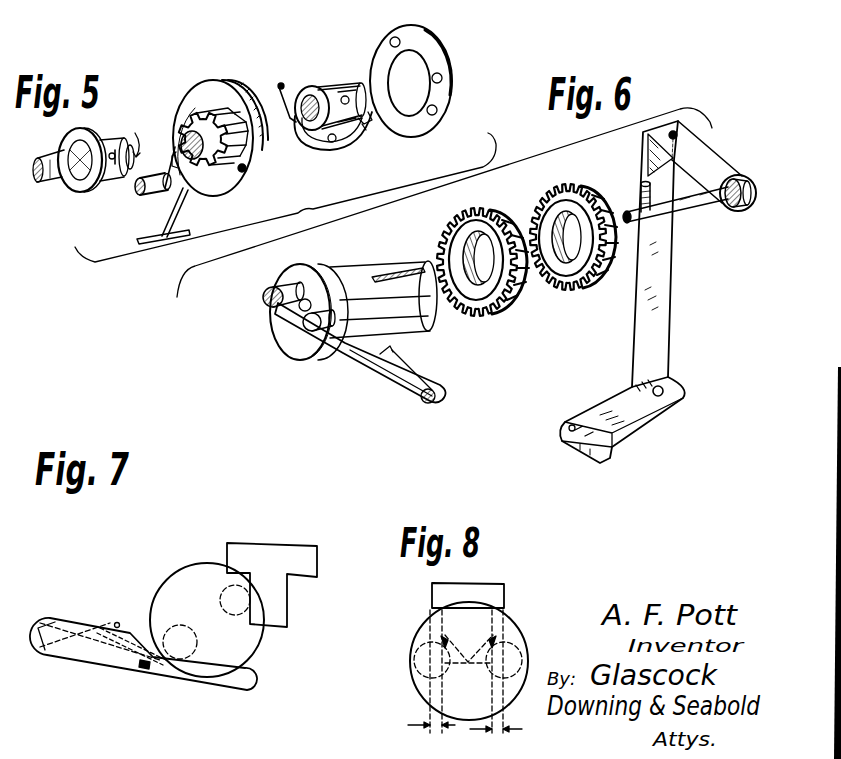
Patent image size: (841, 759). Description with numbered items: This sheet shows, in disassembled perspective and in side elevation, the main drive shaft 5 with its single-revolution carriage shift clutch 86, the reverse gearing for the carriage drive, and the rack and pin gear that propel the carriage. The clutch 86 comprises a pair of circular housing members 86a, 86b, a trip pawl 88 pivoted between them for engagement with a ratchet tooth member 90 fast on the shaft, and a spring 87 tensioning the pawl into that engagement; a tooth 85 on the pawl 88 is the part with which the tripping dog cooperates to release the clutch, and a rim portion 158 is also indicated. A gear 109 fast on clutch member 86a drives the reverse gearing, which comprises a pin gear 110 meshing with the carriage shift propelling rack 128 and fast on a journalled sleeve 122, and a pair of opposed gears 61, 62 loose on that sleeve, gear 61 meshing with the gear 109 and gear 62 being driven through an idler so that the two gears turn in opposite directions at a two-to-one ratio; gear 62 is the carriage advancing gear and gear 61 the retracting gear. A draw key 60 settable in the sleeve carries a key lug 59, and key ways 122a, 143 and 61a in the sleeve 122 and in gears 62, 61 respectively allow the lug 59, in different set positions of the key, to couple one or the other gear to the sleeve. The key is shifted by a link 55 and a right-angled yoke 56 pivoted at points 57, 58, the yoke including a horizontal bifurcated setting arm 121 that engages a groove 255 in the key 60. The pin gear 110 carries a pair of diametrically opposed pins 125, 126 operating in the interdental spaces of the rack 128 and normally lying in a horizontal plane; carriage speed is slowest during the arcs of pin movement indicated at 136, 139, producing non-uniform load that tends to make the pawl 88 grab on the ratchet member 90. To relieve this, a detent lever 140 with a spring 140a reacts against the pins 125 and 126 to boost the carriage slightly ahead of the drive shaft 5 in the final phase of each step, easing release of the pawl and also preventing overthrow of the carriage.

In FIG. 5, the drive shaft 5 is at (50, 183).
In FIG. 5, the disc rim 158 is at (222, 82).
In FIG. 5, the carriage shift clutch 86 is at (245, 187).
In FIG. 5, the circular housing member 86a is at (237, 182).
In FIG. 5, the circular housing member 86b is at (413, 127).
In FIG. 5, the gear 109 is at (215, 167).
In FIG. 5, the spring 87 is at (291, 92).
In FIG. 5, the ratchet tooth member 90 is at (339, 84).
In FIG. 5, the trip pawl 88 is at (320, 150).
In FIG. 5, the tooth 85 is at (363, 128).
In FIG. 6, the pin gear 110 is at (297, 352).
In FIG. 7, the pin gear 110 is at (247, 650).
In FIG. 8, the pin gear 110 is at (410, 675).
In FIG. 6, the sleeve 122 is at (393, 307).
In FIG. 6, the key way 122a is at (370, 274).
In FIG. 6, the pin 125 is at (262, 296).
In FIG. 7, the pin 125 is at (228, 592).
In FIG. 8, the pin 125 is at (521, 652).
In FIG. 6, the pin 126 is at (302, 322).
In FIG. 7, the pin 126 is at (173, 632).
In FIG. 8, the pin 126 is at (413, 648).
In FIG. 6, the detent lever 140 is at (377, 370).
In FIG. 7, the detent lever 140 is at (90, 653).
In FIG. 6, the spring 140a is at (398, 393).
In FIG. 7, the spring 140a is at (77, 627).
In FIG. 6, the gear 62 is at (447, 243).
In FIG. 6, the key way 143 is at (473, 237).
In FIG. 6, the gear 61 is at (567, 183).
In FIG. 6, the key way 61a is at (557, 208).
In FIG. 6, the right angled yoke 56 is at (663, 273).
In FIG. 6, the bifurcated setting arm 121 is at (707, 173).
In FIG. 6, the groove 255 is at (733, 217).
In FIG. 6, the draw key 60 is at (685, 217).
In FIG. 6, the key lug 59 is at (642, 192).
In FIG. 6, the pivot point 58 is at (678, 135).
In FIG. 6, the pivot point 57 is at (673, 392).
In FIG. 6, the link 55 is at (610, 440).
In FIG. 7, the carriage shift propelling rack 128 is at (262, 552).
In FIG. 8, the arc of pin movement 136 is at (425, 726).
In FIG. 8, the arc of pin movement 139 is at (505, 732).